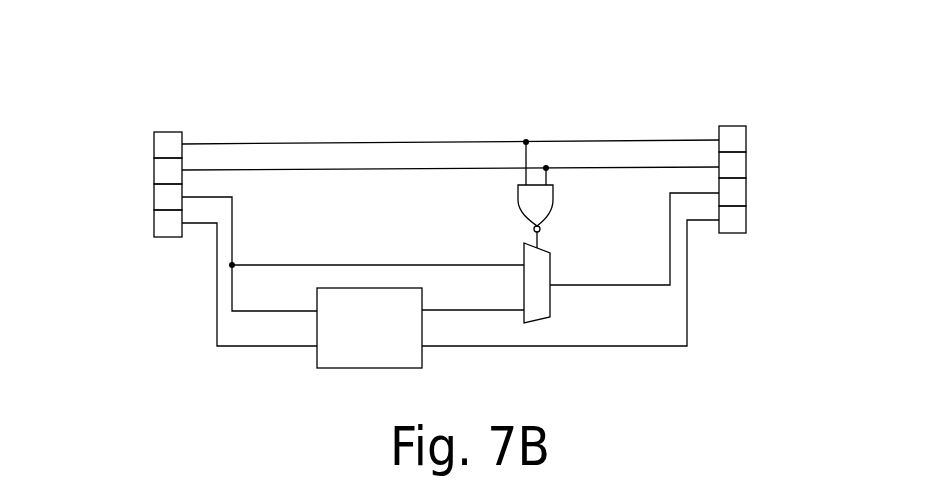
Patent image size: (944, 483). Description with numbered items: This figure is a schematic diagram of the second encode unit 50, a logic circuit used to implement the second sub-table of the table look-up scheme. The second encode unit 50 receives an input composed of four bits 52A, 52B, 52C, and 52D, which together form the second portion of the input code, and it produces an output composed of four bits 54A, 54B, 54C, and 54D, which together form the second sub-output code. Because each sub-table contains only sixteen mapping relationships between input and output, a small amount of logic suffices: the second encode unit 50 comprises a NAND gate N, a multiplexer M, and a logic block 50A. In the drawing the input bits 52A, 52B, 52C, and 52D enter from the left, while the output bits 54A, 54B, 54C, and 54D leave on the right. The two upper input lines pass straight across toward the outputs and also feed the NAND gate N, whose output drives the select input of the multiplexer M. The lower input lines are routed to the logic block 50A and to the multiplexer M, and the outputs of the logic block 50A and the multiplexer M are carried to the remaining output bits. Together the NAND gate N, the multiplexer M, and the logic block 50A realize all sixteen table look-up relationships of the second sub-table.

The second encode unit 50 is at (452, 86).
The logic block 50A is at (402, 342).
The input bit 52A is at (154, 143).
The input bit 52B is at (154, 172).
The input bit 52C is at (154, 199).
The input bit 52D is at (154, 222).
The output bit 54A is at (746, 137).
The output bit 54B is at (746, 168).
The output bit 54C is at (746, 193).
The output bit 54D is at (746, 220).
The NAND gate N is at (522, 200).
The multiplexer M is at (550, 267).